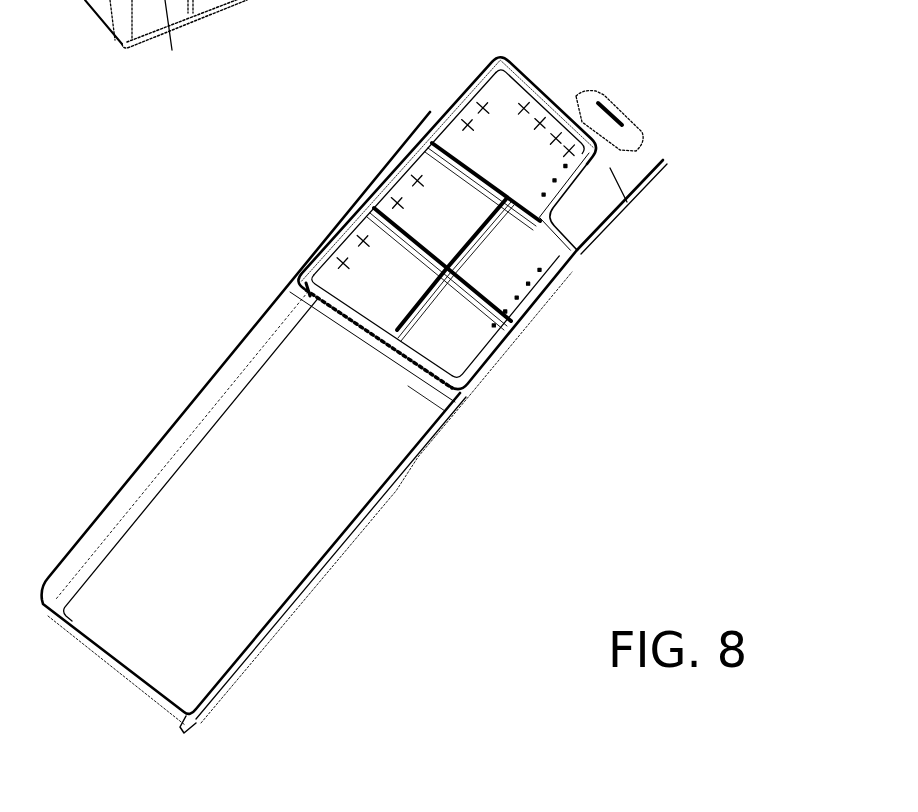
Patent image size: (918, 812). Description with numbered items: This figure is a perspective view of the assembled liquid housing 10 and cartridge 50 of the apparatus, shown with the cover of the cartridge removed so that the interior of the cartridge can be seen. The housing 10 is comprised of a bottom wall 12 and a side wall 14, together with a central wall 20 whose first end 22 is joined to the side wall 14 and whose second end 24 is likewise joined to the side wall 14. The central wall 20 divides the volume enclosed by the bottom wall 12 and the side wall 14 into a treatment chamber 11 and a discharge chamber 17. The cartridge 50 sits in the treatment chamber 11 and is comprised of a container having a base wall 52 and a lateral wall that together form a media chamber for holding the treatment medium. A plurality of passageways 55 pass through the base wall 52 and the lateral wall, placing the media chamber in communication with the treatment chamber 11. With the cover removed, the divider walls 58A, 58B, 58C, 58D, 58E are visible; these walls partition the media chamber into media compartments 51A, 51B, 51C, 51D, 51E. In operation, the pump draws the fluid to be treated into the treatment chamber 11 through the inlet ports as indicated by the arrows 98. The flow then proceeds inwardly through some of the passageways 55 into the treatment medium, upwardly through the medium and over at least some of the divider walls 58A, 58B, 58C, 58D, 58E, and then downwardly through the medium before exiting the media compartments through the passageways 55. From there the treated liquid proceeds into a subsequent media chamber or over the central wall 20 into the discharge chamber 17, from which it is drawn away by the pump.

The housing 10 is at (337, 0).
The treatment chamber 11 is at (607, 197).
The bottom wall 12 is at (262, 489).
The side wall 14 is at (137, 483).
The discharge chamber 17 is at (253, 608).
The central wall 20 is at (380, 353).
The first end 22 is at (305, 288).
The second end 24 is at (443, 410).
The cartridge 50 is at (544, 70).
The media compartment 51A is at (503, 137).
The media compartment 51B is at (408, 208).
The media compartment 51C is at (547, 270).
The media compartment 51D is at (380, 292).
The media compartment 51E is at (480, 357).
The base wall 52 is at (438, 231).
The passageways 55 is at (540, 130).
The divider wall 58A is at (457, 172).
The divider wall 58B is at (390, 237).
The divider wall 58C is at (502, 325).
The divider wall 58D is at (433, 298).
The divider wall 58E is at (494, 232).
The arrows 98 is at (597, 182).